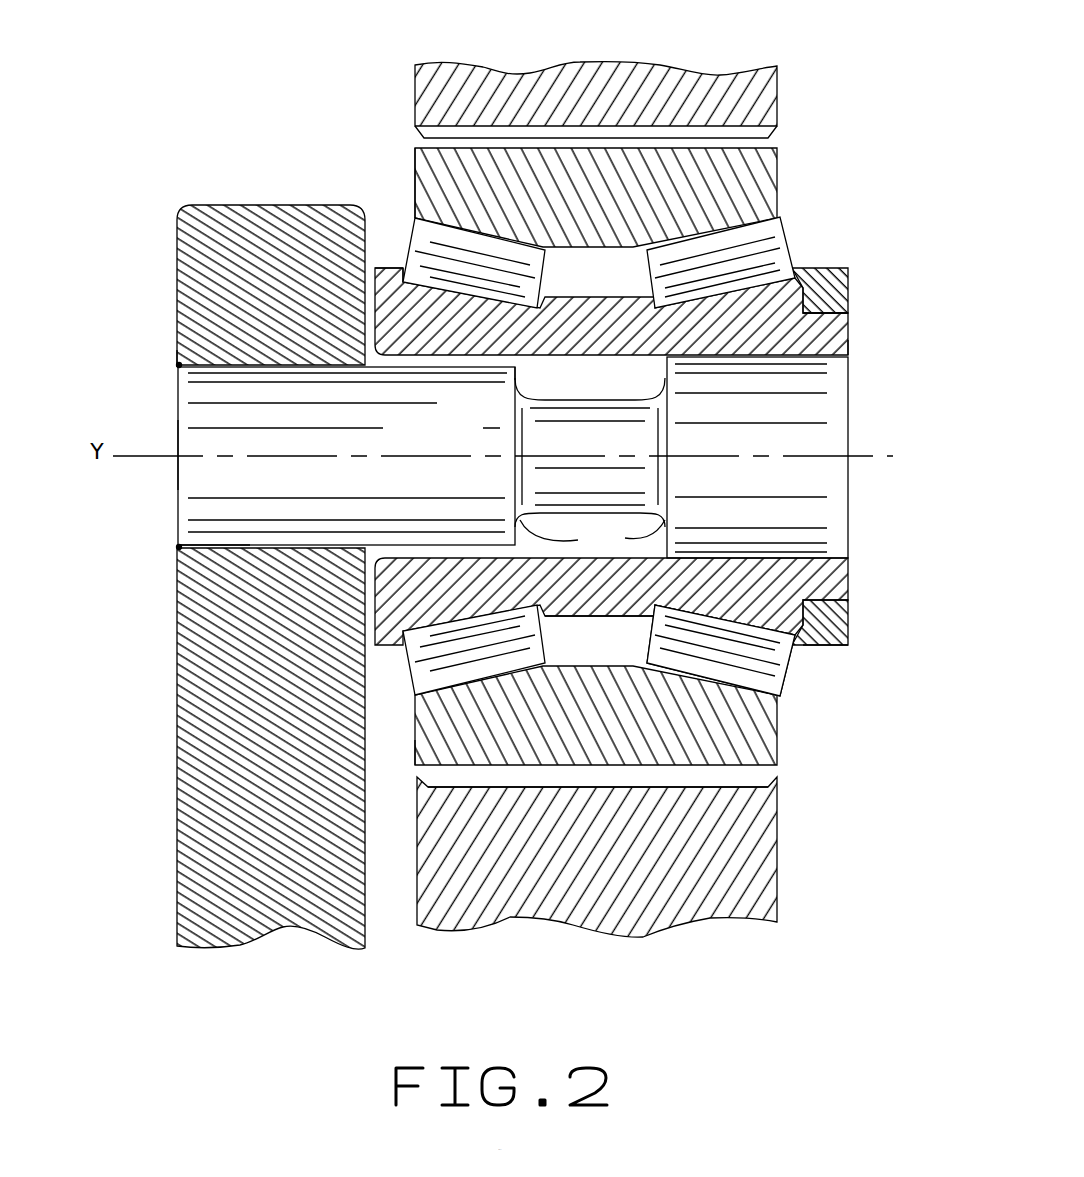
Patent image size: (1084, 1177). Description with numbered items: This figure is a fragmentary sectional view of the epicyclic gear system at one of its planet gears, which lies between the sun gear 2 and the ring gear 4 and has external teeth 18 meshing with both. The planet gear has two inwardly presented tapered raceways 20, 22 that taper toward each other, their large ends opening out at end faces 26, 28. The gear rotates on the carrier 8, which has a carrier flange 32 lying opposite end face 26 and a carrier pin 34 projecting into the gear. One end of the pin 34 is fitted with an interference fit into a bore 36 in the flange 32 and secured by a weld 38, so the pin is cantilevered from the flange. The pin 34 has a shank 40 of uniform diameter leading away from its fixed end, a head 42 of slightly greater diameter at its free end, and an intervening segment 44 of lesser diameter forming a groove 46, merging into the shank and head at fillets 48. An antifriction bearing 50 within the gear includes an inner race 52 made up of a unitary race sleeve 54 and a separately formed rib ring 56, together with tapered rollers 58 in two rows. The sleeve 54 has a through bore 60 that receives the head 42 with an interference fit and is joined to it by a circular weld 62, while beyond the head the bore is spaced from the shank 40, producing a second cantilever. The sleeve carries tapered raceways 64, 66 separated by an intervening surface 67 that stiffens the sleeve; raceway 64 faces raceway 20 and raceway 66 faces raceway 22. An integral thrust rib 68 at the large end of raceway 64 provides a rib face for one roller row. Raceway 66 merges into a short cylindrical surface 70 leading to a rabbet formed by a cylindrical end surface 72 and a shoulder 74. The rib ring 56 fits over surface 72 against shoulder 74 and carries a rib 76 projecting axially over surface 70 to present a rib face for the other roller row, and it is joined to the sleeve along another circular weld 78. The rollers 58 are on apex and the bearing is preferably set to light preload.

The sun gear 2 is at (665, 915).
The ring gear 4 is at (598, 78).
The carrier 8 is at (188, 162).
The external teeth 18 is at (748, 780).
The tapered raceway 20 is at (415, 183).
The tapered raceway 22 is at (746, 243).
The end face 26 is at (418, 738).
The end face 28 is at (779, 737).
The carrier flange 32 is at (233, 773).
The carrier pin 34 is at (222, 471).
The bore 36 is at (244, 545).
The weld 38 is at (180, 353).
The shank 40 is at (320, 492).
The head 42 is at (832, 423).
The intervening segment 44 is at (617, 451).
The groove 46 is at (599, 383).
The fillet 48 is at (590, 535).
The antifriction bearing 50 is at (856, 191).
The inner race 52 is at (853, 578).
The race sleeve 54 is at (452, 333).
The rib ring 56 is at (830, 292).
The tapered rollers 58 is at (412, 665).
The through bore 60 is at (506, 360).
The circular weld 62 is at (848, 357).
The tapered raceway 64 is at (440, 290).
The tapered raceway 66 is at (745, 292).
The intervening surface 67 is at (579, 619).
The thrust rib 68 is at (377, 267).
The cylindrical surface 70 is at (797, 633).
The cylindrical end surface 72 is at (850, 628).
The shoulder 74 is at (848, 647).
The rib 76 is at (796, 268).
The circular weld 78 is at (848, 313).